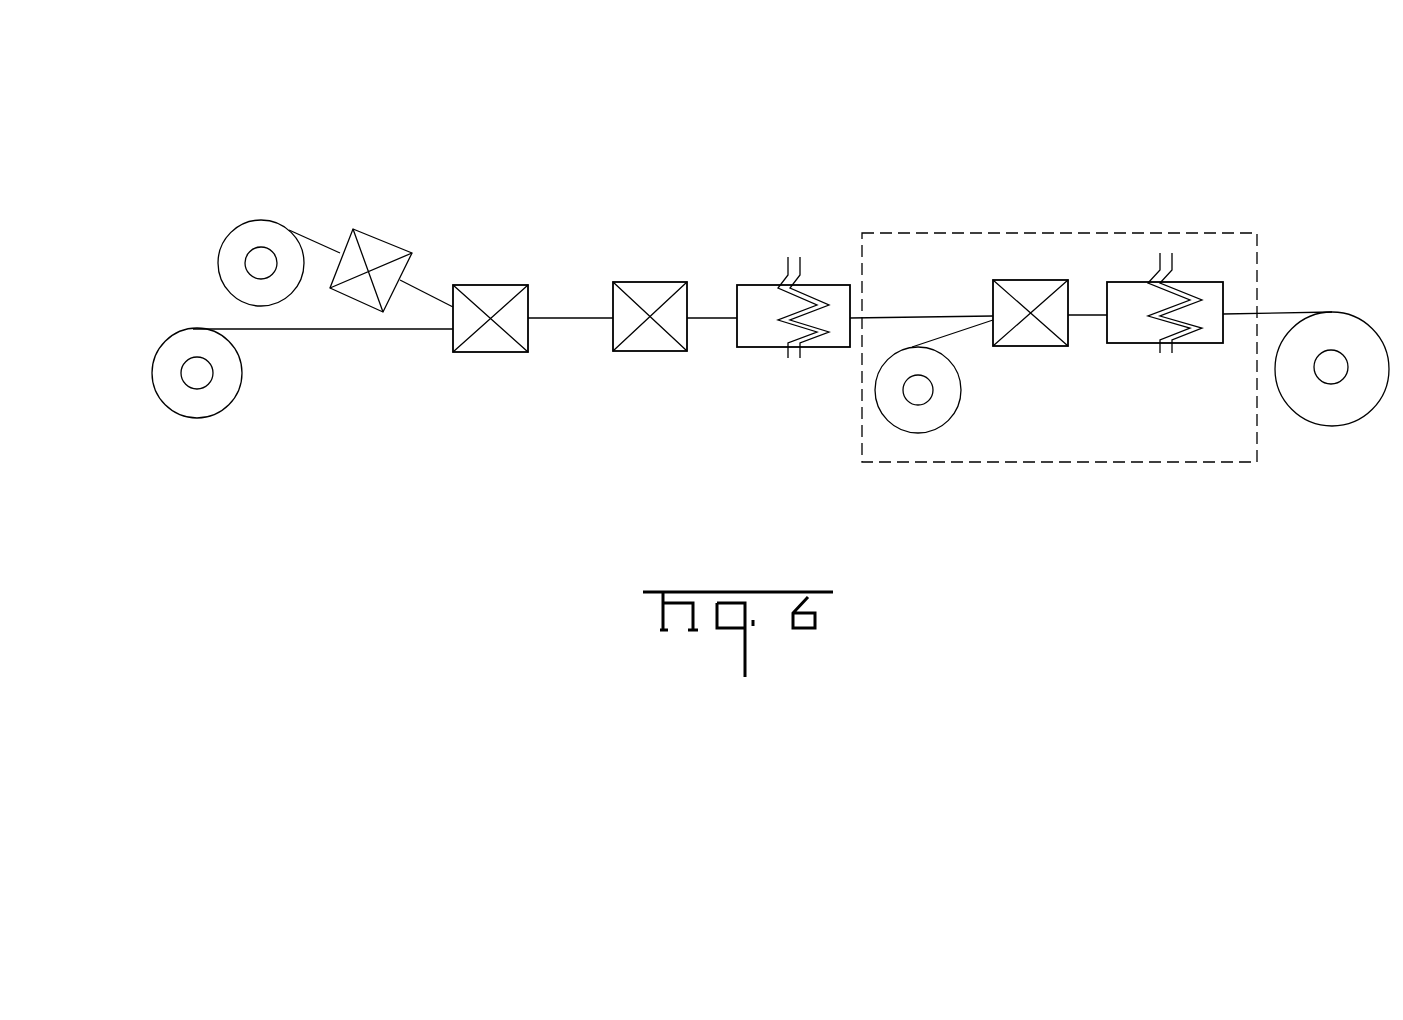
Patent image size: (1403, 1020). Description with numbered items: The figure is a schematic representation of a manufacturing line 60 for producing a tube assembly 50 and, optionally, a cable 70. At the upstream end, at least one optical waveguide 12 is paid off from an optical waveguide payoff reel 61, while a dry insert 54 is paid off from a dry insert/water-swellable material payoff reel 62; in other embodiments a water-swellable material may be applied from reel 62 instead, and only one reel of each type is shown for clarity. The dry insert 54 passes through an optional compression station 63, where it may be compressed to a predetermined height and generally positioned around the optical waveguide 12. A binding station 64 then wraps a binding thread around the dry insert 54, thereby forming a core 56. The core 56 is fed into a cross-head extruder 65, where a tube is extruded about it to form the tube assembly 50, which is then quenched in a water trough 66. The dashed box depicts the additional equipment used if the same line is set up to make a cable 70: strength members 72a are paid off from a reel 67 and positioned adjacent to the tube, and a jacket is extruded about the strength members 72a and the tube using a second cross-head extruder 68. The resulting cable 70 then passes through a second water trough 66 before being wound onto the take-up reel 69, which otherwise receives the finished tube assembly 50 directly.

The manufacturing line 60 is at (272, 148).
The dry insert/water-swellable material payoff reel 62 is at (235, 232).
The optical waveguide payoff reel 61 is at (208, 408).
The optical waveguide 12 is at (287, 332).
The dry insert 54 is at (313, 237).
The compression station 63 is at (388, 240).
The binding station 64 is at (493, 283).
The core 56 is at (565, 320).
The cross-head extruder 65 is at (658, 280).
The tube assembly 50 is at (712, 315).
The water trough 66 is at (753, 348).
The cross-head extruder 68 is at (1000, 282).
The reel 67 is at (950, 420).
The strength members 72a is at (960, 335).
The cable 70 is at (1090, 317).
The take-up reel 69 is at (1332, 407).